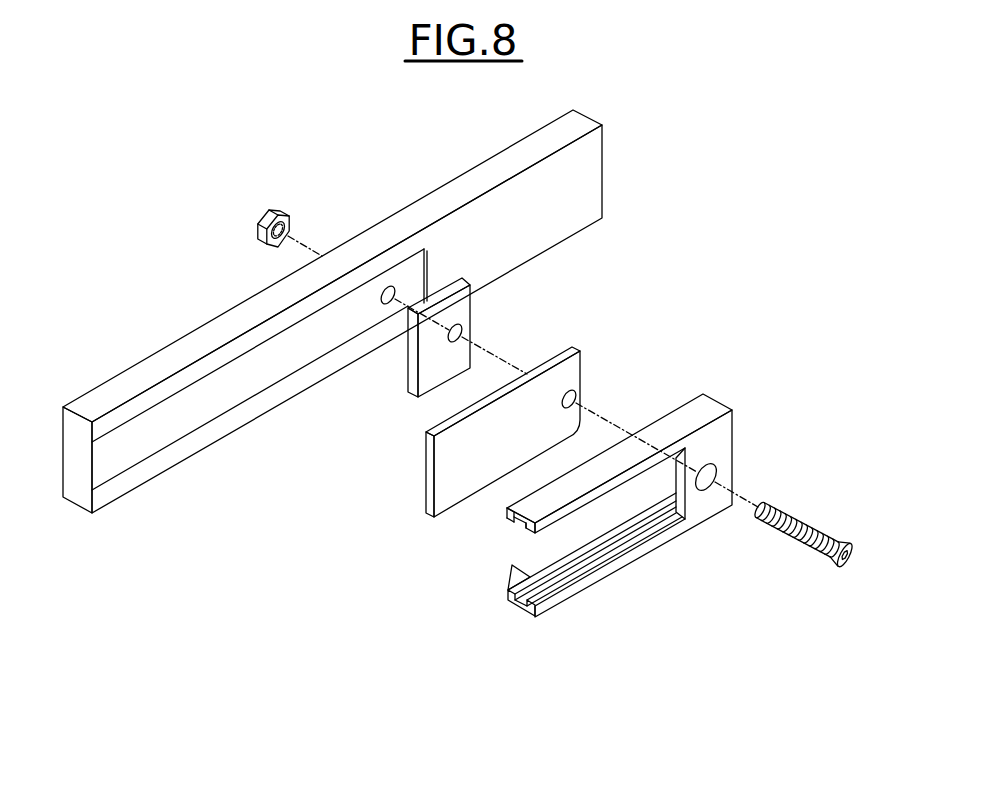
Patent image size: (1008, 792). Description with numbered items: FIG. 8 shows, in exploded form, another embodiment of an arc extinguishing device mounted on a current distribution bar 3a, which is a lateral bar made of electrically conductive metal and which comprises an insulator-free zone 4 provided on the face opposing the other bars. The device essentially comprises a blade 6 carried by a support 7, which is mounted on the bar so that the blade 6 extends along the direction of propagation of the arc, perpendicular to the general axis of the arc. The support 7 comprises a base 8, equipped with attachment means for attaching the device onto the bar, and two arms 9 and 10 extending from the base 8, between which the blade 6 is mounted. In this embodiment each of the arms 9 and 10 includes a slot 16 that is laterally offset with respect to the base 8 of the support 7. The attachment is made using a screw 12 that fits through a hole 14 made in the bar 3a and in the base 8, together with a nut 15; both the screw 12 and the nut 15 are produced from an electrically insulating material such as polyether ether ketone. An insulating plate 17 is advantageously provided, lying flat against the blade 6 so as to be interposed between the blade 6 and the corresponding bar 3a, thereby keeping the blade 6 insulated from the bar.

The current distribution bar 3a is at (458, 182).
The insulator-free zone 4 is at (127, 453).
The blade 6 is at (453, 495).
The support 7 is at (724, 392).
The base 8 is at (708, 492).
The arm 9 is at (612, 475).
The arm 10 is at (560, 603).
The screw 12 is at (802, 520).
The hole 14 is at (584, 396).
The nut 15 is at (271, 204).
The slot 16 is at (506, 586).
The insulating plate 17 is at (470, 313).